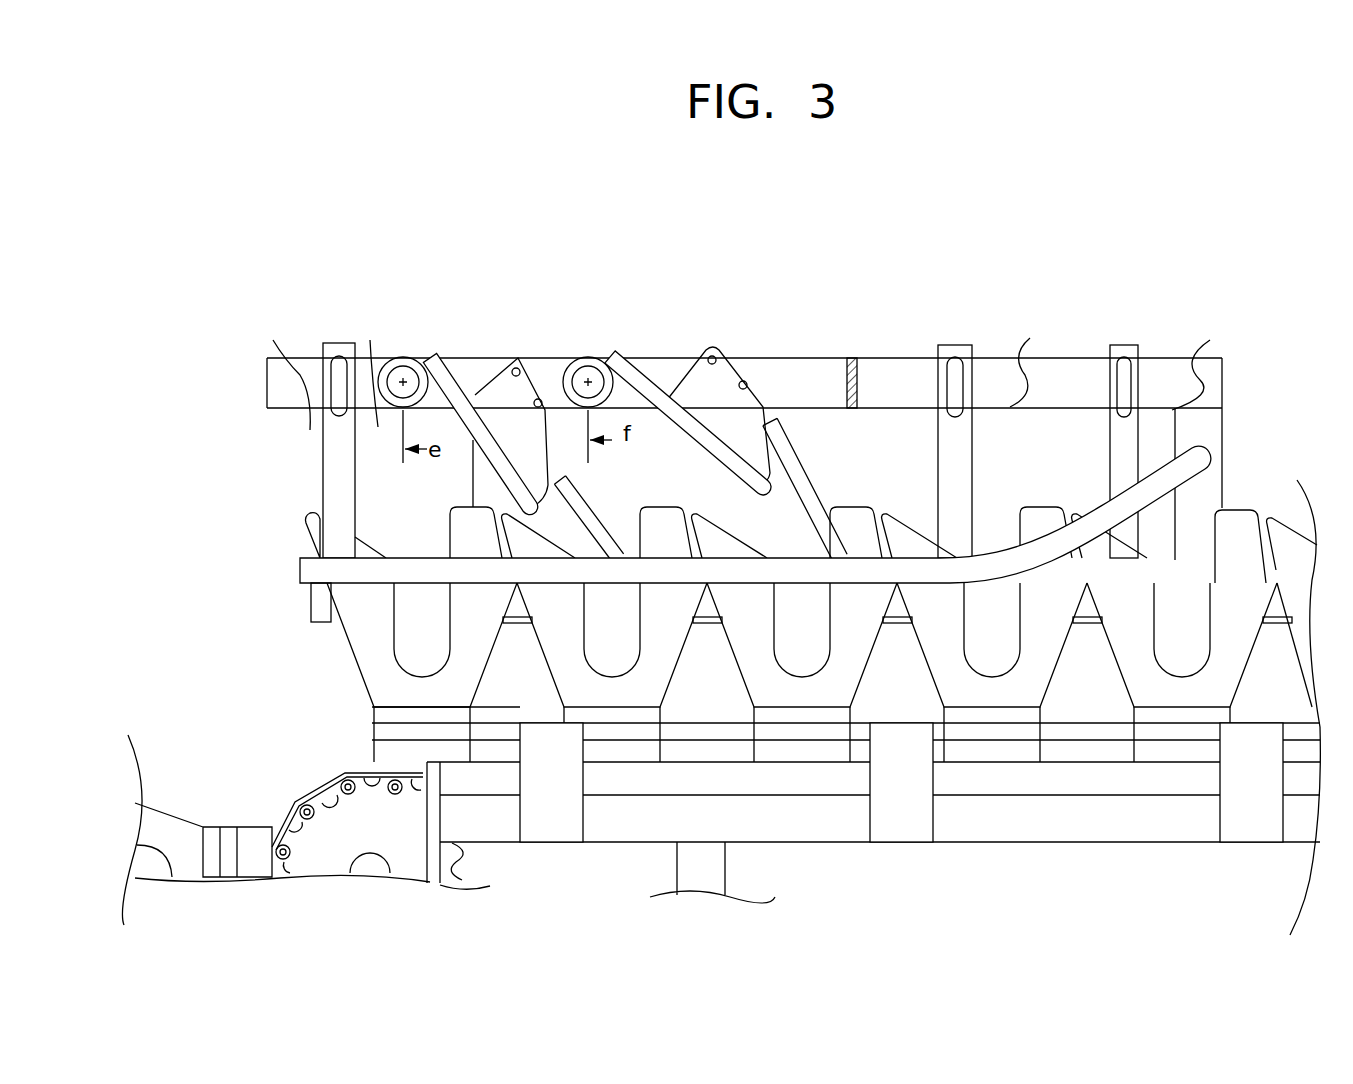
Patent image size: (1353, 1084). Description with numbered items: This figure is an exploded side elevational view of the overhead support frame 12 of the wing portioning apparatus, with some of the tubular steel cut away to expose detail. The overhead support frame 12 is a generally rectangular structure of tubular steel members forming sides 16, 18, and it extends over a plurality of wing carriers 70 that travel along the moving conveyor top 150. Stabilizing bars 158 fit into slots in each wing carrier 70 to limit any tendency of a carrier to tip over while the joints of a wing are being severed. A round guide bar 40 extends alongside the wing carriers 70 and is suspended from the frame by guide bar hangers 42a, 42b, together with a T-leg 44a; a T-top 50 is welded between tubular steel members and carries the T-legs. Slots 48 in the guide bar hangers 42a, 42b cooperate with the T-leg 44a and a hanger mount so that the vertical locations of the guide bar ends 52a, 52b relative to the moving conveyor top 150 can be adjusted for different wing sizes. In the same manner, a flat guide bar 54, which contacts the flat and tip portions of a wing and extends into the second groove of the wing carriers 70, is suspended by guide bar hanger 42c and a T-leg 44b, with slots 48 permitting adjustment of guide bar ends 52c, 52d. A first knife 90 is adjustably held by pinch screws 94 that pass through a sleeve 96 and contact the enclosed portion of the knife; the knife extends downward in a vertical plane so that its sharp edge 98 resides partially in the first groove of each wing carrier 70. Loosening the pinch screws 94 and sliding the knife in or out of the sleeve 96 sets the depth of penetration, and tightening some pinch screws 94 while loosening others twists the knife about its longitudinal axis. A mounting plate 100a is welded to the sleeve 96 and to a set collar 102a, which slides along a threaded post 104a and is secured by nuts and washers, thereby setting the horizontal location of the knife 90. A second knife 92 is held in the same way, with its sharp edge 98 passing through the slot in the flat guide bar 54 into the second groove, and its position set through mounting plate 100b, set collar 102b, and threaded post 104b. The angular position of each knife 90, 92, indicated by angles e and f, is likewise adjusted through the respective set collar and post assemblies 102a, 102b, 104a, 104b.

The overhead support frame 12 is at (243, 355).
The side of overhead support frame 16 is at (272, 400).
The side of overhead support frame 18 is at (378, 358).
The round guide bar 40 is at (378, 578).
The guide bar hanger 42a is at (1150, 425).
The guide bar hanger 42b is at (340, 460).
The guide bar hanger 42c is at (975, 420).
The T-leg 44a is at (1085, 368).
The T-leg 44b is at (895, 368).
The slots 48 is at (337, 366).
The T-top 50 is at (860, 368).
The guide bar end 52a is at (1160, 490).
The guide bar end 52b is at (300, 572).
The guide bar end 52c is at (1205, 452).
The guide bar end 52d is at (312, 608).
The flat guide bar 54 is at (713, 627).
The wing carriers 70 is at (372, 650).
The first knife 90 is at (786, 473).
The second knife 92 is at (562, 507).
The pinch screws 94 is at (540, 398).
The sleeve 96 is at (492, 385).
The sharp edge 98 is at (595, 520).
The mounting plate 100a is at (642, 364).
The mounting plate 100b is at (447, 370).
The set collar 102a is at (590, 362).
The set collar 102b is at (405, 365).
The threaded post 104a is at (598, 378).
The threaded post 104b is at (412, 374).
The moving conveyor top 150 is at (318, 787).
The stabilizing bars 158 is at (665, 735).